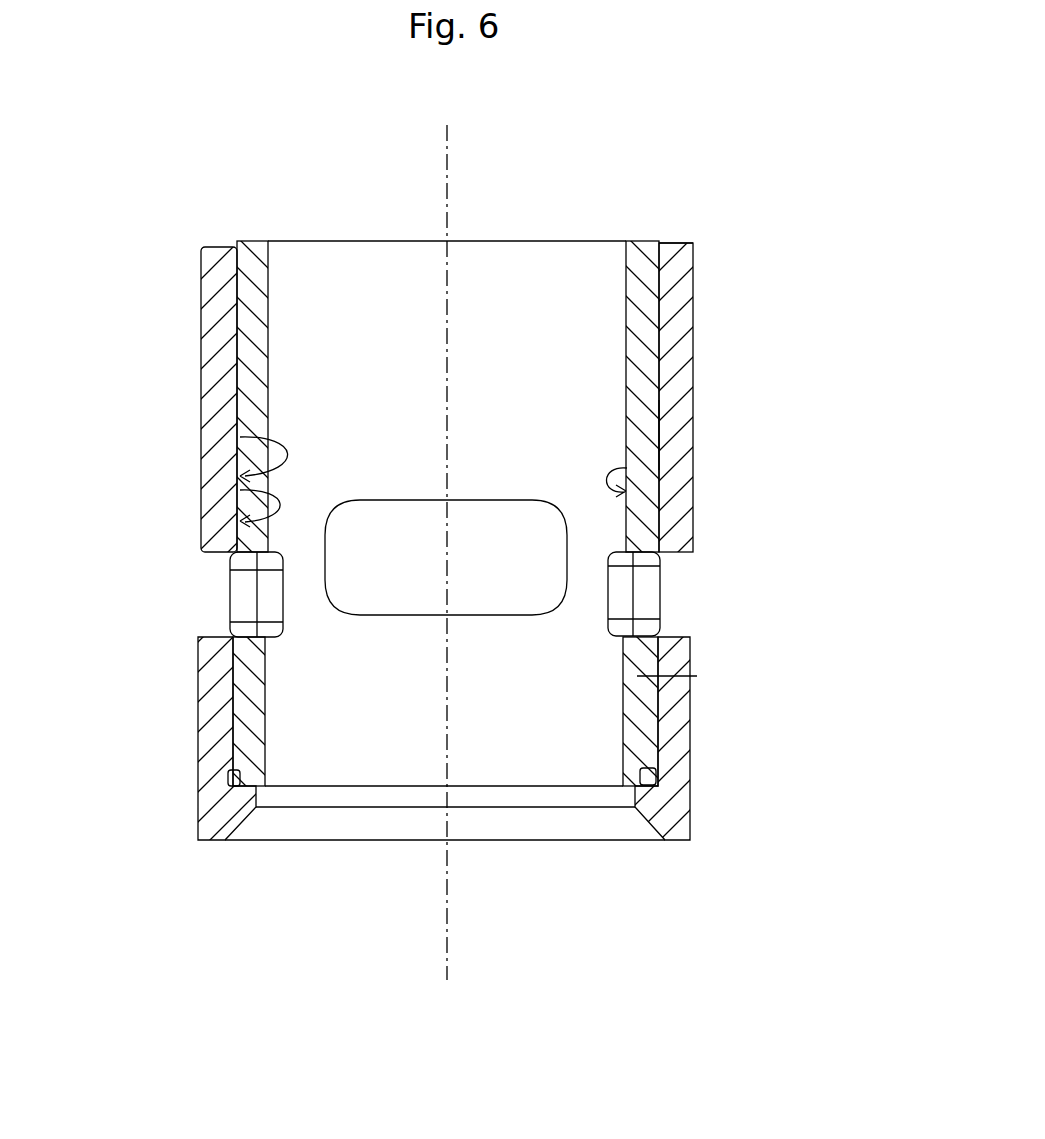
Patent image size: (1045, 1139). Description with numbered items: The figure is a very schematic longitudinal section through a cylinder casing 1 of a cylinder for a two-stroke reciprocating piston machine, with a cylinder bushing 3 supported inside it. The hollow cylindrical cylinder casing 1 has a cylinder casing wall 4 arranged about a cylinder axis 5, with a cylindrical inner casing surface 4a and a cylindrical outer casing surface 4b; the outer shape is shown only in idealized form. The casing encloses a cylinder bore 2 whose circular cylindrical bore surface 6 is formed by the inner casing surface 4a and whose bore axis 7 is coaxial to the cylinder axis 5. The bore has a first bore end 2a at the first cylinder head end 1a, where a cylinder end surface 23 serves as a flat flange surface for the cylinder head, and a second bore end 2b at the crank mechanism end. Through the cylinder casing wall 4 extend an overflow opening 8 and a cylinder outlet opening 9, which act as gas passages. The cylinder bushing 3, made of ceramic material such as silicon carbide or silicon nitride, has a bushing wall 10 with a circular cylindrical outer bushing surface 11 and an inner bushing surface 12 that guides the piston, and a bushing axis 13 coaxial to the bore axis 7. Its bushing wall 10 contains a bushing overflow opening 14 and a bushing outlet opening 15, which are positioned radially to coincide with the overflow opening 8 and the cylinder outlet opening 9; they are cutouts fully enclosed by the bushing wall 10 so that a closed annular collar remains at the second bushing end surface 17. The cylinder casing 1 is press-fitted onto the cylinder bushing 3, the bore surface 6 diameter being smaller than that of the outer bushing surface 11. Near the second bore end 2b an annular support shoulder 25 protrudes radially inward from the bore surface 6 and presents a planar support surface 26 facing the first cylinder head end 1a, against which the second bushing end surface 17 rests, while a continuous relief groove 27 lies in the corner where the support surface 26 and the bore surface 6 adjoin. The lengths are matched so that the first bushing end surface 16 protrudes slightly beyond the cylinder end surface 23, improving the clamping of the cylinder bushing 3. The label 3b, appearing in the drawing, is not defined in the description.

The cylinder casing 1 is at (697, 335).
The first cylinder head end 1a is at (704, 189).
The cylinder bore 2 is at (558, 295).
The first bore end 2a is at (603, 217).
The second bore end 2b is at (597, 856).
The cylinder bushing 3 is at (255, 405).
The end face of inner sleeve 3b is at (640, 240).
The cylinder casing wall 4 is at (668, 395).
The inner casing surface 4a is at (270, 490).
The outer casing surface 4b is at (708, 346).
The cylinder axis 5 is at (493, 599).
The bore surface 6 is at (268, 443).
The bore axis 7 is at (493, 599).
The overflow opening 8 is at (238, 617).
The cylinder outlet opening 9 is at (563, 557).
The bushing wall 10 is at (255, 713).
The outer bushing surface 11 is at (673, 443).
The inner bushing surface 12 is at (632, 463).
The bushing axis 13 is at (445, 948).
The bushing overflow opening 14 is at (265, 585).
The bushing outlet opening 15 is at (540, 548).
The first bushing end surface 16 is at (261, 228).
The second bushing end surface 17 is at (262, 790).
The cylinder end surface 23 is at (221, 231).
The support shoulder 25 is at (645, 797).
The support surface 26 is at (645, 765).
The relief groove 27 is at (643, 777).